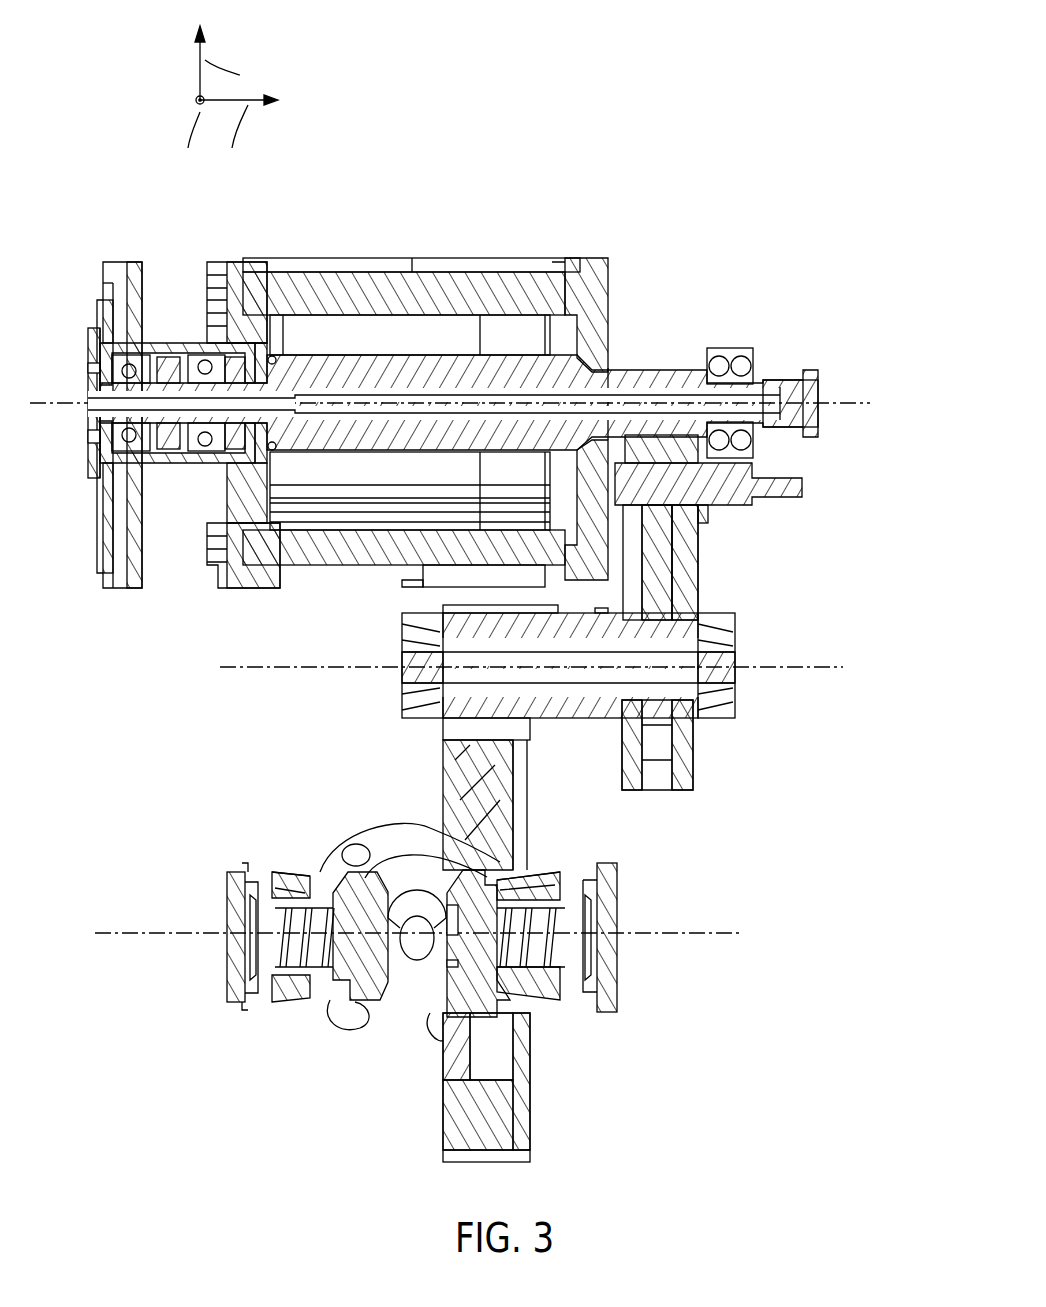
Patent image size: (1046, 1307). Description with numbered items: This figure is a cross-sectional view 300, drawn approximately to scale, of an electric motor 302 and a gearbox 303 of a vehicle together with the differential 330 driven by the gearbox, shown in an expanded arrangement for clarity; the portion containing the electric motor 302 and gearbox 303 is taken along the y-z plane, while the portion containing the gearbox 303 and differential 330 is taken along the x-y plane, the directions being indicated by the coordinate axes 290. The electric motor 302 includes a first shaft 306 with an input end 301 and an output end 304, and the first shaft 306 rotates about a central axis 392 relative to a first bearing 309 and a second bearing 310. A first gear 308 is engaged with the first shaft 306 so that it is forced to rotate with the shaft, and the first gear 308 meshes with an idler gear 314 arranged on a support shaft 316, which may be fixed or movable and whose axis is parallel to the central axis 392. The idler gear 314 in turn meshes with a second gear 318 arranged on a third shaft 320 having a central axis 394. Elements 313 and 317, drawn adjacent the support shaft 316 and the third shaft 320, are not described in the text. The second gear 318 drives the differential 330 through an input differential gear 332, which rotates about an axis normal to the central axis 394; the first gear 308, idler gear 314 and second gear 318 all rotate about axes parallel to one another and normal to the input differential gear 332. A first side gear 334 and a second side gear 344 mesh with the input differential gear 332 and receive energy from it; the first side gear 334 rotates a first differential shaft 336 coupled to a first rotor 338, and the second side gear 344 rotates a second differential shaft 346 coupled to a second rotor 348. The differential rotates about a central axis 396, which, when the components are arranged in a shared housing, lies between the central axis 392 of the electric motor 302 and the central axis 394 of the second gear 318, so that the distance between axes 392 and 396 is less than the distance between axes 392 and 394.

The coordinate system 290 is at (186, 68).
The cross-sectional view 300 is at (697, 117).
The input end 301 is at (78, 284).
The electric motor 302 is at (305, 262).
The gearbox 303 is at (812, 818).
The output end 304 is at (847, 356).
The first shaft 306 is at (480, 355).
The first gear 308 is at (680, 445).
The first bearing 309 is at (203, 362).
The second bearing 310 is at (735, 348).
The retaining ring 313 is at (712, 517).
The idler gear 314 is at (688, 580).
The support shaft 316 is at (803, 475).
The bearing 317 is at (398, 705).
The second gear 318 is at (738, 712).
The third shaft 320 is at (725, 642).
The differential 330 is at (383, 1066).
The input differential gear 332 is at (410, 830).
The first side gear 334 is at (322, 882).
The first differential shaft 336 is at (288, 990).
The first rotor 338 is at (232, 1010).
The second side gear 344 is at (280, 870).
The second differential shaft 346 is at (545, 975).
The second rotor 348 is at (618, 863).
The central axis 392 is at (40, 397).
The central axis 394 is at (265, 662).
The central axis 396 is at (140, 932).